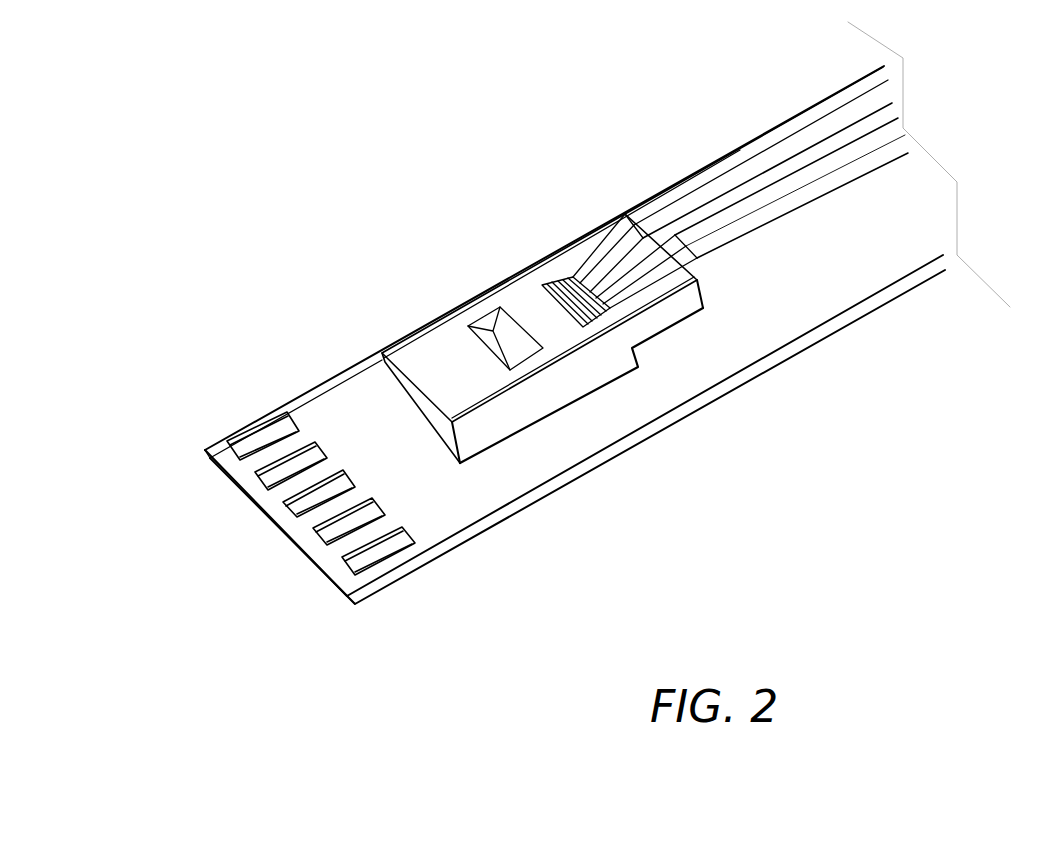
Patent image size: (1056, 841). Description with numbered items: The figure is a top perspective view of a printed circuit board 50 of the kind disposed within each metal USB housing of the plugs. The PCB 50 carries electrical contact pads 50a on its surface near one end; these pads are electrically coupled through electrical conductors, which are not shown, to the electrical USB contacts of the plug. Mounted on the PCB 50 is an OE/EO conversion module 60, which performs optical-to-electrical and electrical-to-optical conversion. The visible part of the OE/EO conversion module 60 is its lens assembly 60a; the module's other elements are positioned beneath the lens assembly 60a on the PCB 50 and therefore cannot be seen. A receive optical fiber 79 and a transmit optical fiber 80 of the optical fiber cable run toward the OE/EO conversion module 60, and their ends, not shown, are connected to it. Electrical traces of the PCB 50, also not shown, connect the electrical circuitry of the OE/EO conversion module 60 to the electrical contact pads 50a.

The printed circuit board 50 is at (812, 302).
The electrical contact pads 50a is at (355, 562).
The OE/EO conversion module 60 is at (437, 305).
The lens assembly 60a is at (470, 390).
The receive optical fiber 79 is at (838, 177).
The transmit optical fiber 80 is at (759, 190).